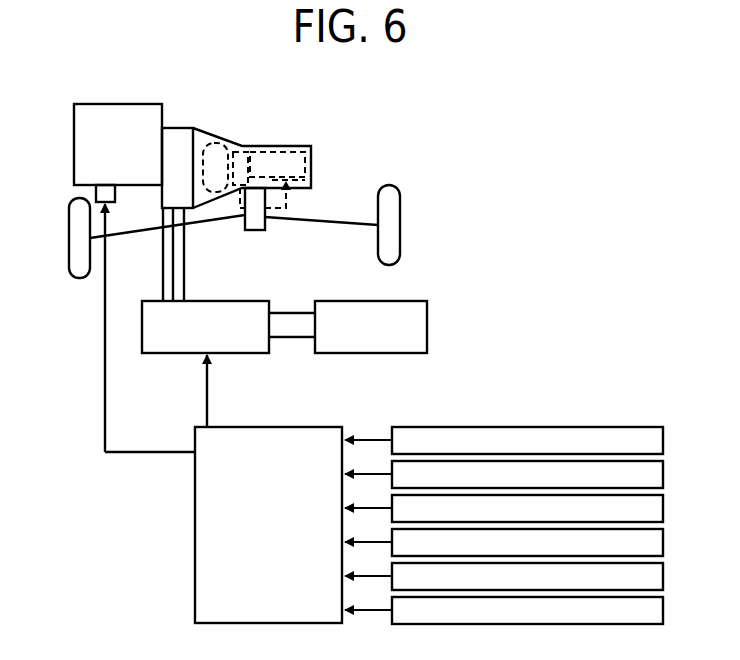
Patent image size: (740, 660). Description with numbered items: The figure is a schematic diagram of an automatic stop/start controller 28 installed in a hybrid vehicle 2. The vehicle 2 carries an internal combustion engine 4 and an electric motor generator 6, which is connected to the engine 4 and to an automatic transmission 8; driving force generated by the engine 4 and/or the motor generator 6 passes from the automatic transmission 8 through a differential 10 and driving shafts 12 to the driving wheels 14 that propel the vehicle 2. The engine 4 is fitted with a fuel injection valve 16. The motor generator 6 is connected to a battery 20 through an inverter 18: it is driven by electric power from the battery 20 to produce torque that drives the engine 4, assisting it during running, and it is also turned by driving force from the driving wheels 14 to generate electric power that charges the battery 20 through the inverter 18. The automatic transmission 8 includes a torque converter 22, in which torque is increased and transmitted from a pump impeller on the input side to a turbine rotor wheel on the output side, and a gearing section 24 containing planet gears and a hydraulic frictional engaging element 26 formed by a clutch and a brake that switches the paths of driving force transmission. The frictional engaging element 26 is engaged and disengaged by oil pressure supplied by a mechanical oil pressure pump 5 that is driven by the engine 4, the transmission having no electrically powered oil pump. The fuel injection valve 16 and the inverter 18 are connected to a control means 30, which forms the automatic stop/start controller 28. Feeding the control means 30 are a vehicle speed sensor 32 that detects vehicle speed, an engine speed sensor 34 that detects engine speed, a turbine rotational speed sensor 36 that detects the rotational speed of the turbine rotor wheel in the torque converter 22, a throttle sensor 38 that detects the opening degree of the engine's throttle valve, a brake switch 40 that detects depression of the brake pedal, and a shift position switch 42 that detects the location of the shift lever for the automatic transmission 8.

The vehicle 2 is at (364, 118).
The internal combustion engine 4 is at (72, 127).
The mechanical oil pressure pump 5 is at (240, 151).
The electric motor generator 6 is at (183, 126).
The automatic transmission 8 is at (270, 144).
The differential 10 is at (258, 231).
The driving shafts 12 is at (213, 223).
The driving wheels 14 is at (75, 241).
The fuel injection valve 16 is at (96, 190).
The inverter 18 is at (172, 353).
The battery 20 is at (402, 353).
The torque converter 22 is at (216, 145).
The gearing section 24 is at (292, 151).
The frictional engaging element 26 is at (308, 177).
The automatic stop/start controller 28 is at (136, 536).
The control means 30 is at (200, 557).
The vehicle speed sensor 32 is at (663, 440).
The engine speed sensor 34 is at (663, 474).
The turbine rotational speed sensor 36 is at (663, 508).
The throttle sensor 38 is at (663, 542).
The brake switch 40 is at (663, 576).
The shift position switch 42 is at (663, 610).